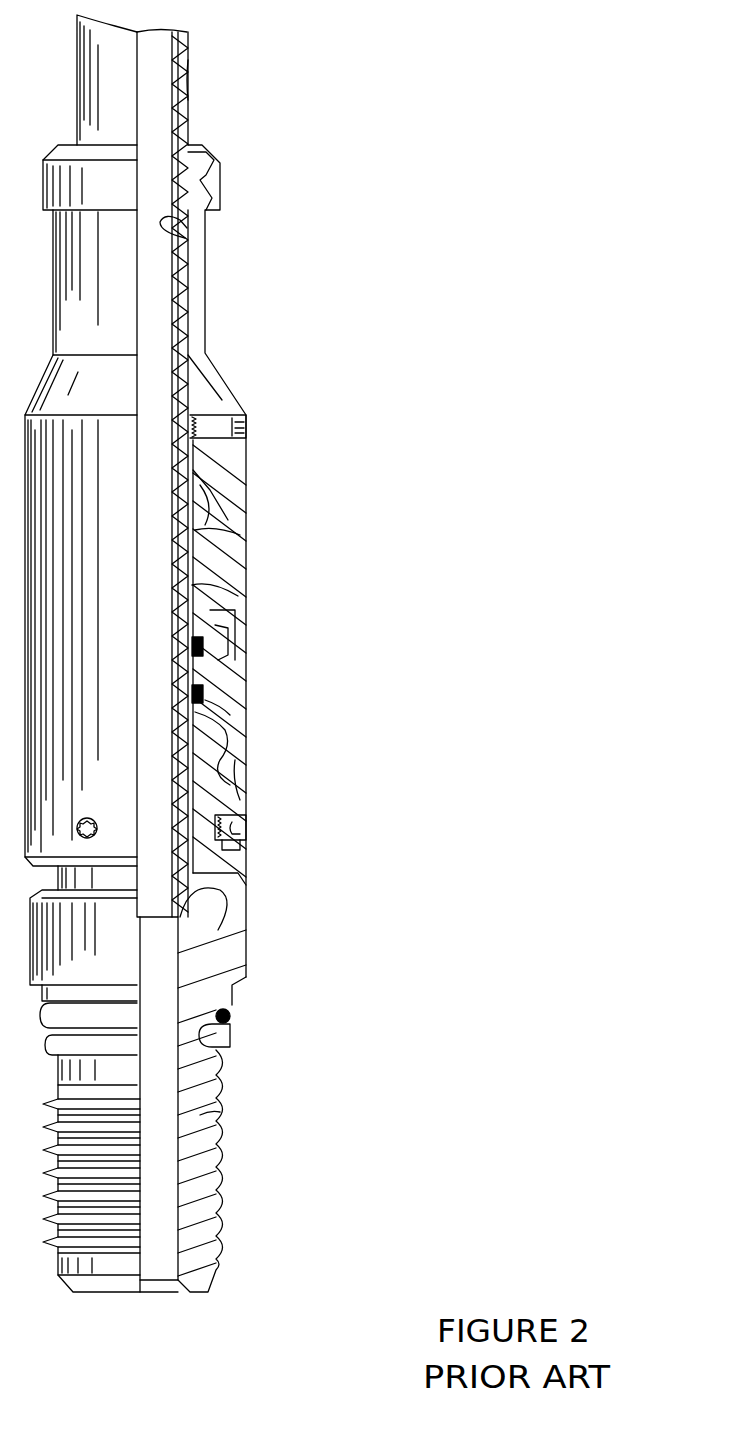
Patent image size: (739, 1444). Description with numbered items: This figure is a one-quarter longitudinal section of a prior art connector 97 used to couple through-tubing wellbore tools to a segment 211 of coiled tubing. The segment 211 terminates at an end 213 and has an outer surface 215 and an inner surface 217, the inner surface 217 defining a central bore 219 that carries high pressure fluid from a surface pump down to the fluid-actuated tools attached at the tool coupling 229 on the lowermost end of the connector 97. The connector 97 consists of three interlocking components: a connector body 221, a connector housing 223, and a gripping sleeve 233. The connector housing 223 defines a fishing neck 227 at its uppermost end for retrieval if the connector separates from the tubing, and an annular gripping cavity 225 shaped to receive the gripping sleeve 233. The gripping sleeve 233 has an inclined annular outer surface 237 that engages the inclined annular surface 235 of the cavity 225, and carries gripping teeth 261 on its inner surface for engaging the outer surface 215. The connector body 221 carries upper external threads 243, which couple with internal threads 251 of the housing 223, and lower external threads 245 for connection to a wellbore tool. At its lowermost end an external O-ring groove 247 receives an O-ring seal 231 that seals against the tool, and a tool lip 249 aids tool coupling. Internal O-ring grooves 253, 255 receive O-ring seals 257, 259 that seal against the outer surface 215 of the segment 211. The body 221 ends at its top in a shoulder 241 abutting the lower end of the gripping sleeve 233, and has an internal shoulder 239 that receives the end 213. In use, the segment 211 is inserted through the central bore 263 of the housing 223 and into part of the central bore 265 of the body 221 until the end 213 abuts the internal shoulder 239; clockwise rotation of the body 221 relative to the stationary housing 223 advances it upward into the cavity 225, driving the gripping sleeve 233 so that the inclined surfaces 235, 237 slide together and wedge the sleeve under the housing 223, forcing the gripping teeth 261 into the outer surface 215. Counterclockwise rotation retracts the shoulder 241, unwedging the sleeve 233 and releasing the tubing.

The connector 97 is at (320, 415).
The segment of coiled tubing 211 is at (187, 82).
The end of segment 213 is at (202, 946).
The outer surface 215 is at (185, 112).
The inner surface 217 is at (182, 230).
The central bore 219 is at (150, 318).
The connector body 221 is at (222, 1110).
The connector housing 223 is at (232, 566).
The annular gripping cavity 225 is at (202, 502).
The fishing neck 227 is at (206, 262).
The tool coupling 229 is at (262, 1138).
The O-ring seal 231 is at (230, 1016).
The gripping sleeve 233 is at (202, 596).
The inclined annular surface 235 is at (215, 456).
The inclined annular outer surface 237 is at (196, 482).
The internal shoulder 239 is at (202, 900).
The shoulder 241 is at (216, 620).
The upper external threads 243 is at (202, 720).
The lower external threads 245 is at (222, 1160).
The external O-ring groove 247 is at (230, 1040).
The tool lip 249 is at (236, 988).
The internal threads 251 is at (227, 746).
The internal O-ring groove 253 is at (206, 692).
The internal O-ring groove 255 is at (212, 646).
The O-ring seal 257 is at (220, 636).
The O-ring seal 259 is at (222, 700).
The gripping teeth 261 is at (202, 540).
The central bore of connector housing 263 is at (196, 176).
The central bore of connector body 265 is at (236, 826).